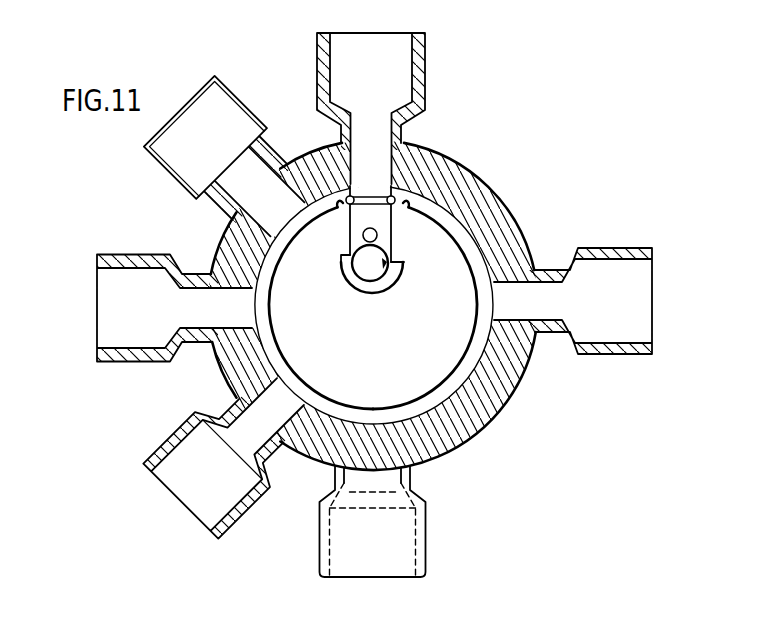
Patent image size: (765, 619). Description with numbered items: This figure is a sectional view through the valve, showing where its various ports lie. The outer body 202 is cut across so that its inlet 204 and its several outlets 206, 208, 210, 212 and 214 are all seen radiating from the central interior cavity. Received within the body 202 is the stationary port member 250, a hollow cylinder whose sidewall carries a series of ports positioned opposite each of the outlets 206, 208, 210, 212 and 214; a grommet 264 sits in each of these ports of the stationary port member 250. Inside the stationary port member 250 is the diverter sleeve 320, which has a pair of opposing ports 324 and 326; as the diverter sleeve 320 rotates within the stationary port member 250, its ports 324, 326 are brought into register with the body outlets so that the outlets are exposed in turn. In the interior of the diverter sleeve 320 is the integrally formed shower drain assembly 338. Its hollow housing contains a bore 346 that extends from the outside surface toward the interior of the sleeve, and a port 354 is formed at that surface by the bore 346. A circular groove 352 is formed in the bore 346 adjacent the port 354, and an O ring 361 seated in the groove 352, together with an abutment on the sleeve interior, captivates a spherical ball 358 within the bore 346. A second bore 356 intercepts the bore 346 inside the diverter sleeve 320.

The body 202 is at (478, 212).
The inlet 204 is at (422, 578).
The outlet 206 is at (182, 507).
The outlet 208 is at (97, 310).
The outlet 210 is at (194, 100).
The outlet 212 is at (425, 34).
The outlet 214 is at (652, 353).
The stationary port member 250 is at (475, 230).
The grommet 264 is at (407, 177).
The diverter sleeve 320 is at (490, 250).
The port 324 is at (287, 373).
The port 326 is at (458, 250).
The shower drain assembly 338 is at (340, 263).
The bore 346 is at (396, 216).
The circular groove 352 is at (361, 194).
The port 354 is at (369, 192).
The second bore 356 is at (380, 235).
The spherical ball 358 is at (384, 279).
The O ring 361 is at (378, 195).